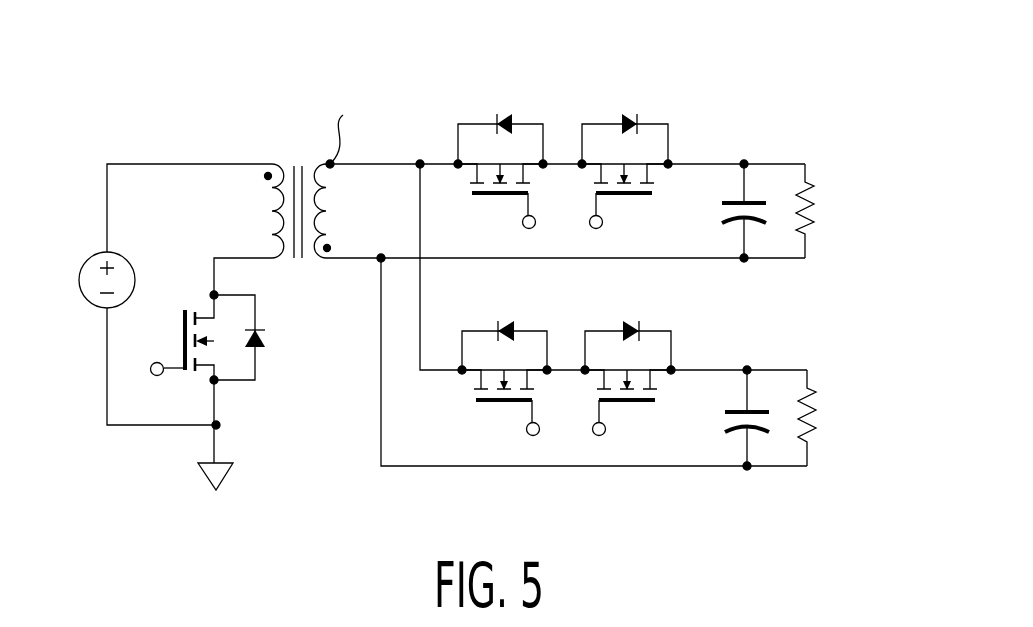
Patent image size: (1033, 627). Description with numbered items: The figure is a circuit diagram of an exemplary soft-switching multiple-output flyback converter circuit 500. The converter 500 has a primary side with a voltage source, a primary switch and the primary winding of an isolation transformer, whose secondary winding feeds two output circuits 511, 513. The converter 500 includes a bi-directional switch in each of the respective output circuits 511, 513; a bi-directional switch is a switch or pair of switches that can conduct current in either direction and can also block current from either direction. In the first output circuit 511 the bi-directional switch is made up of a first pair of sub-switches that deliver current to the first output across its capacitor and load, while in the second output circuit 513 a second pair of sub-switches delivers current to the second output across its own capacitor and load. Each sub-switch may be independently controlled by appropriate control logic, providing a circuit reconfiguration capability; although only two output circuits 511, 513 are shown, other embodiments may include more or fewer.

The flyback converter circuit 500 is at (767, 78).
The output circuit 511 is at (840, 179).
The output circuit 513 is at (841, 386).